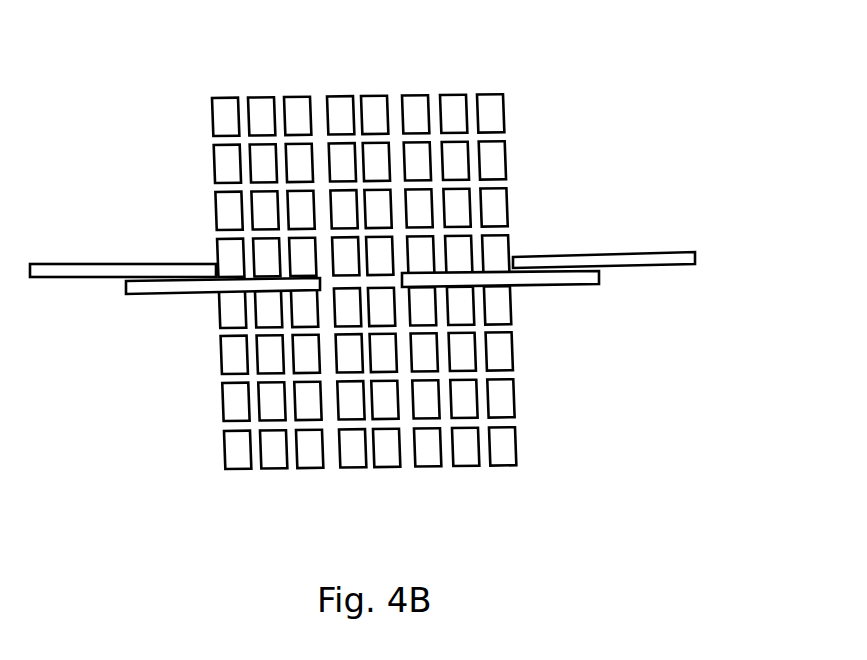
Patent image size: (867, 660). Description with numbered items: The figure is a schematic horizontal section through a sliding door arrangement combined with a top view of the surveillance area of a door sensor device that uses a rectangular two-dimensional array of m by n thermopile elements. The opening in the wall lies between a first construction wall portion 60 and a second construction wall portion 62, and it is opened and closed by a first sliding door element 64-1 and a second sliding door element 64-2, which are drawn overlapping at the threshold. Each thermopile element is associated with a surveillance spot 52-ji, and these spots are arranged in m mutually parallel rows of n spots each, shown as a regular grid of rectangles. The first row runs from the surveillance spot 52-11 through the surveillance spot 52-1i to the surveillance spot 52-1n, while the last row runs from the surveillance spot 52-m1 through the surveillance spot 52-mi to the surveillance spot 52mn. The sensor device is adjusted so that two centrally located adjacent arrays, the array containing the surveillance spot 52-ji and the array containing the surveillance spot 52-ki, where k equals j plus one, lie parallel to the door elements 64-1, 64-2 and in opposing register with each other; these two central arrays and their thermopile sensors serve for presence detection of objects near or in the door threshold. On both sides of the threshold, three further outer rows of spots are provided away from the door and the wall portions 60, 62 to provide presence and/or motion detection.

The surveillance spot 52-m1 is at (225, 106).
The surveillance spot 52-mi is at (336, 105).
The surveillance spot 52mn is at (487, 104).
The surveillance spot 52-ki is at (342, 242).
The surveillance spot 52-ji is at (345, 318).
The surveillance spot 52-11 is at (233, 460).
The surveillance spot 52-1i is at (347, 460).
The surveillance spot 52-1n is at (502, 460).
The first construction wall portion 60 is at (75, 271).
The second construction wall portion 62 is at (673, 263).
The first sliding door element 64-1 is at (180, 288).
The second sliding door element 64-2 is at (588, 281).